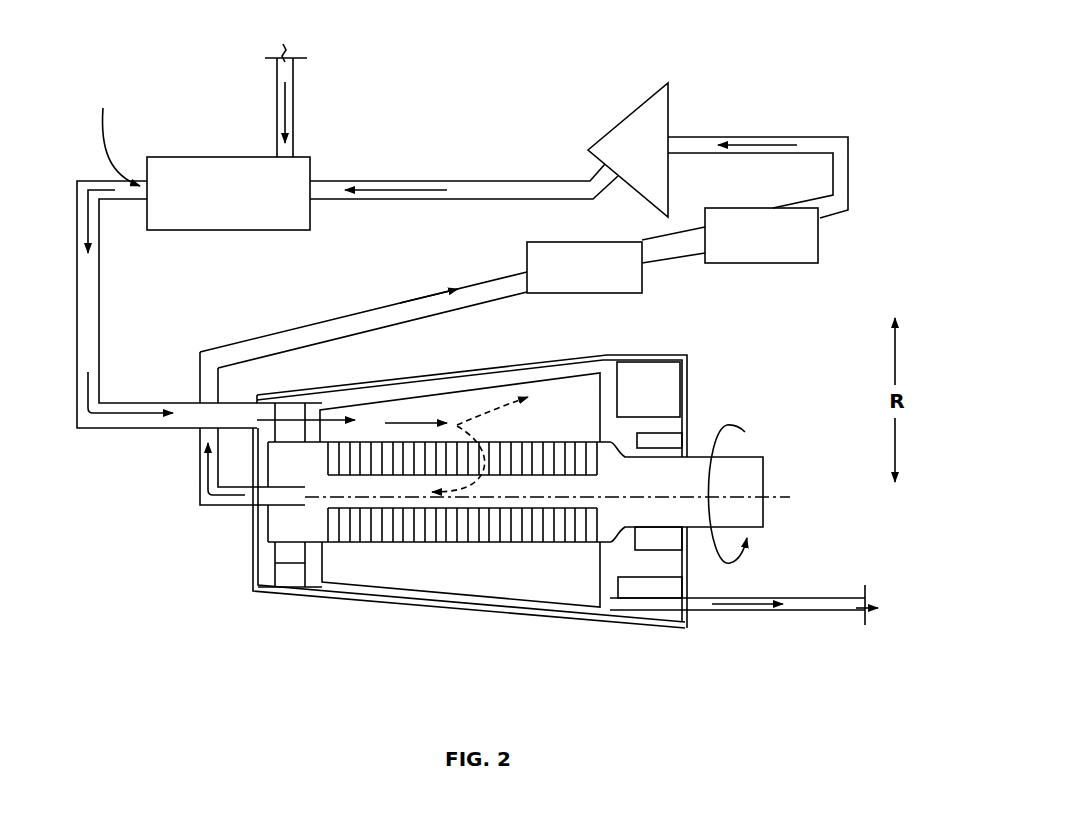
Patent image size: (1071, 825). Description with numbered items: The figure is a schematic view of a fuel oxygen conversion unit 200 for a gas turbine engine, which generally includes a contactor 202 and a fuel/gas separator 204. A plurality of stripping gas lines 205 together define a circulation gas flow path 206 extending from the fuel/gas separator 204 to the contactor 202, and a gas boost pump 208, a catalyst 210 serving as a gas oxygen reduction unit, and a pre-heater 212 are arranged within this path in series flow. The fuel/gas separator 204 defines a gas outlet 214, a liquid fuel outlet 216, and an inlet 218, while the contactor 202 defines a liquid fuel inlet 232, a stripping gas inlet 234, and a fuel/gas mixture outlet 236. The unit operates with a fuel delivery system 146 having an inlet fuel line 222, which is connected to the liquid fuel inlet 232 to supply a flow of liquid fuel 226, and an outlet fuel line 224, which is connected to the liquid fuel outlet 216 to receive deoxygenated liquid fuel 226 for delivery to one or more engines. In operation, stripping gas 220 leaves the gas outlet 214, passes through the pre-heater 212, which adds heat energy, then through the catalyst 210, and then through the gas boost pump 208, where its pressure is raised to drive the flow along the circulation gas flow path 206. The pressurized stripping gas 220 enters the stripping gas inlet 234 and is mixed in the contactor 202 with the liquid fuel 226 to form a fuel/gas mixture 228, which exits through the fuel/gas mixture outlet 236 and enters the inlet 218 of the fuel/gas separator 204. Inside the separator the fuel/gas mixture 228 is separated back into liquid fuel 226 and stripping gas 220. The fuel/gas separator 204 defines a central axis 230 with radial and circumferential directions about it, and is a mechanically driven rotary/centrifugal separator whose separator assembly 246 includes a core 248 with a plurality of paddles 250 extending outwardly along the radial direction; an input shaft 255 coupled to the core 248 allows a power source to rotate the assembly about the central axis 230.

The fuel delivery system 146 is at (335, 62).
The fuel oxygen conversion unit 200 is at (878, 70).
The contactor 202 is at (192, 157).
The fuel/gas separator 204 is at (440, 633).
The stripping gas line 205 is at (466, 181).
The circulation gas flow path 206 is at (527, 181).
The gas boost pump 208 is at (640, 110).
The catalyst 210 is at (785, 264).
The pre-heater 212 is at (600, 293).
The gas outlet 214 is at (256, 497).
The liquid fuel outlet 216 is at (690, 608).
The inlet 218 is at (250, 418).
The stripping gas 220 is at (393, 181).
The inlet fuel line 222 is at (292, 107).
The outlet fuel line 224 is at (803, 597).
The liquid fuel 226 is at (280, 105).
The fuel/gas mixture 228 is at (78, 240).
The central axis 230 is at (748, 493).
The liquid fuel inlet 232 is at (275, 153).
The stripping gas inlet 234 is at (312, 197).
The fuel/gas mixture outlet 236 is at (111, 133).
The separator assembly 246 is at (533, 364).
The core 248 is at (403, 535).
The paddles 250 is at (545, 587).
The input shaft 255 is at (683, 467).